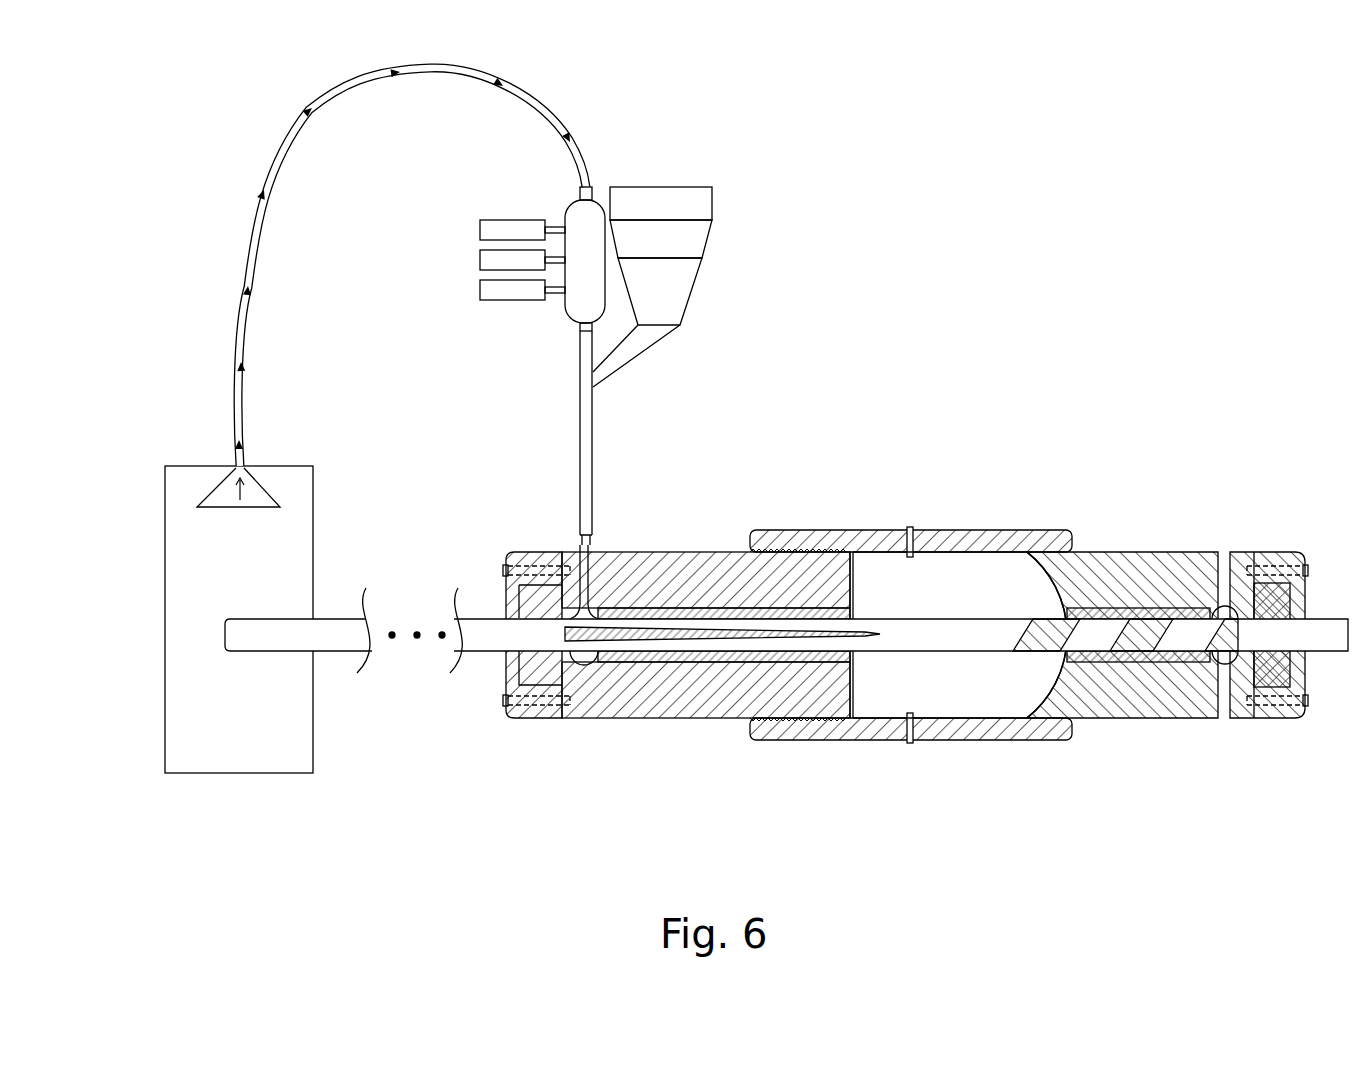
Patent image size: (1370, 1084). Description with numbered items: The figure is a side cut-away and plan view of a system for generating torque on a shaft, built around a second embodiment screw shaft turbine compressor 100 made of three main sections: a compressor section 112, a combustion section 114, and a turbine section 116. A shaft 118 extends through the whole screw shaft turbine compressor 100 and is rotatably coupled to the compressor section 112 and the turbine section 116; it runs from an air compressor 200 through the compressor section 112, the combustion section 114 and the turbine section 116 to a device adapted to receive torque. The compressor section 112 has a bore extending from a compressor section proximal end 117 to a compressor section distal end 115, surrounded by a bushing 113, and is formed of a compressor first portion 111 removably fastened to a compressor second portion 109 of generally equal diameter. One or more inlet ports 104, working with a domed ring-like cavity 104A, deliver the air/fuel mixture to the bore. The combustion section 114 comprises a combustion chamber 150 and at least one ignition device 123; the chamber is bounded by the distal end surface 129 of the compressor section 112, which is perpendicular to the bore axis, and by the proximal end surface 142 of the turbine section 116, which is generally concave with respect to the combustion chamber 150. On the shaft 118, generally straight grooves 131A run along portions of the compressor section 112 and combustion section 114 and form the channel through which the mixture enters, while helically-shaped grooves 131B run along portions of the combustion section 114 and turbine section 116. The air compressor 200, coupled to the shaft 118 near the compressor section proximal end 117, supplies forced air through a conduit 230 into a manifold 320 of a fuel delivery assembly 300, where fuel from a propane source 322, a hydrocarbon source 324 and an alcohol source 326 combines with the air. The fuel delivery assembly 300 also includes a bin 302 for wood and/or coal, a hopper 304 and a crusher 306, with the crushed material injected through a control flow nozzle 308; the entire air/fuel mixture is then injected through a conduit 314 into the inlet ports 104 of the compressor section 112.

The screw shaft turbine compressor 100 is at (800, 435).
The inlet port 104 is at (586, 590).
The domed ring-like cavity 104A is at (585, 604).
The compressor second portion 109 is at (705, 703).
The compressor first portion 111 is at (522, 718).
The compressor section 112 is at (667, 568).
The bushing 113 is at (632, 663).
The combustion section 114 is at (1000, 530).
The compressor section distal end 115 is at (853, 688).
The turbine section 116 is at (1175, 552).
The compressor section proximal end 117 is at (504, 598).
The shaft 118 is at (483, 627).
The ignition device 123 is at (910, 527).
The distal end surface 129 is at (857, 580).
The straight groove 131A is at (873, 636).
The helically-shaped groove 131B is at (1022, 632).
The proximal end surface 142 is at (1052, 697).
The combustion chamber 150 is at (976, 703).
The air compressor 200 is at (182, 584).
The conduit 230 is at (248, 235).
The fuel delivery assembly 300 is at (677, 210).
The bin 302 is at (681, 216).
The hopper 304 is at (681, 252).
The crusher 306 is at (681, 296).
The control flow nozzle 308 is at (640, 346).
The conduit 314 is at (580, 405).
The manifold 320 is at (583, 303).
The propane source 322 is at (480, 229).
The hydrocarbon source 324 is at (480, 259).
The alcohol source 326 is at (480, 289).